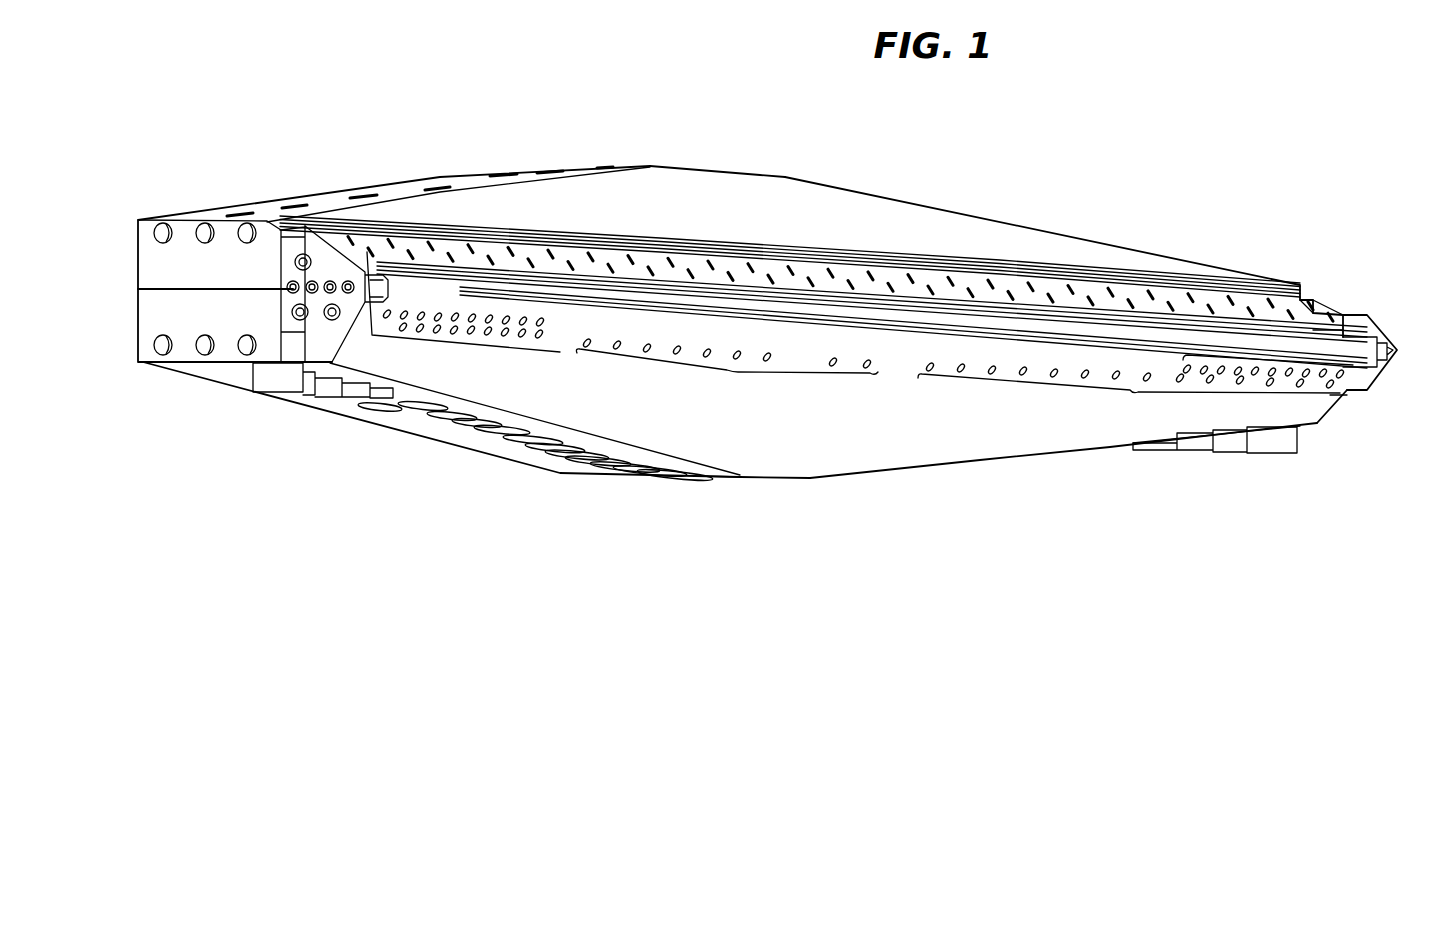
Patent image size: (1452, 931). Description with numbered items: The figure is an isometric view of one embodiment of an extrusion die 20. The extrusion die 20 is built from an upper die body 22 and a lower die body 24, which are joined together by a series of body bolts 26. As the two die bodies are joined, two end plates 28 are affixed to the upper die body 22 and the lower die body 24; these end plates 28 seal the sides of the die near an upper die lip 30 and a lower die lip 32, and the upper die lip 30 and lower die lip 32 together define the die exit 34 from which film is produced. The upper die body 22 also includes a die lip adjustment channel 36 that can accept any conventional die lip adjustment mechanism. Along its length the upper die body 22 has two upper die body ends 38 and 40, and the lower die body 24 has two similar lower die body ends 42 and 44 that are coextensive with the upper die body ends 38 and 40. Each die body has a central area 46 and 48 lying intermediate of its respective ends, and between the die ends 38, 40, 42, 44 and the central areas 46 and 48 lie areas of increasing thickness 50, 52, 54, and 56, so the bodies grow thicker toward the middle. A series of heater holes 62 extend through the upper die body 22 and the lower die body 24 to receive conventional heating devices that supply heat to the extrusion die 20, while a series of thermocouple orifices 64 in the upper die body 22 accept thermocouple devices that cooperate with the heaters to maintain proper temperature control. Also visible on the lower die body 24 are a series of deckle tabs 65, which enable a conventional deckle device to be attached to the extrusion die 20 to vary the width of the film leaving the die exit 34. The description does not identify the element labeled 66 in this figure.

The extrusion die 20 is at (911, 481).
The upper die body 22 is at (1048, 243).
The lower die body 24 is at (943, 441).
The body bolts 26 is at (287, 394).
The end plates 28 is at (303, 322).
The upper die lip 30 is at (1395, 340).
The lower die lip 32 is at (1360, 392).
The die exit 34 is at (790, 313).
The die lip adjustment channel 36 is at (1358, 342).
The upper die body end 38 is at (183, 227).
The upper die body end 40 is at (1313, 307).
The lower die body end 42 is at (150, 343).
The lower die body end 44 is at (1333, 410).
The central area 46 is at (722, 173).
The central area 48 is at (720, 479).
The area of increasing thickness 50 is at (328, 203).
The area of increasing thickness 52 is at (997, 222).
The area of increasing thickness 54 is at (488, 455).
The area of increasing thickness 56 is at (1015, 461).
The heater holes 62 is at (627, 262).
The thermocouple orifices 64 is at (283, 207).
The deckle tabs 65 is at (470, 312).
The grooves 66 is at (443, 423).